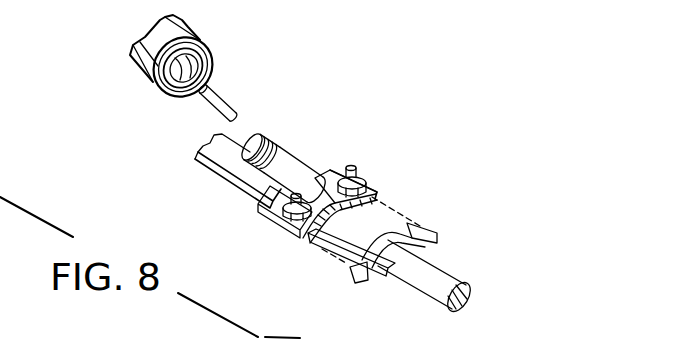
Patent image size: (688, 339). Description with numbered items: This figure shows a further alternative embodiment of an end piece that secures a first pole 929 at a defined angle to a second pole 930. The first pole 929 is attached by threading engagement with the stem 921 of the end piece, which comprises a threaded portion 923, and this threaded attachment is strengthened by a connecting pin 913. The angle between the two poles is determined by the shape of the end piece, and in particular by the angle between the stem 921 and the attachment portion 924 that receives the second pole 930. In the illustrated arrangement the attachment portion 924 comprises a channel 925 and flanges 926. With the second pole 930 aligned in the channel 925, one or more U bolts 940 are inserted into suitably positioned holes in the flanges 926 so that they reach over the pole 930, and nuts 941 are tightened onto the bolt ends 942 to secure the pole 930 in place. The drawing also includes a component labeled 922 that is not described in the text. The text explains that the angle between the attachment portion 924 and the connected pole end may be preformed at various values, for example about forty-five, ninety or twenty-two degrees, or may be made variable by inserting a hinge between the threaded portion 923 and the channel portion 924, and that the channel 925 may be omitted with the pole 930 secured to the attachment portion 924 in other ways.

The connecting pin 913 is at (223, 90).
The stem 921 is at (291, 166).
The mounting plate 922 is at (242, 189).
The threaded portion 923 is at (263, 133).
The attachment portion 924 is at (390, 235).
The channel 925 is at (427, 224).
The flanges 926 is at (255, 207).
The first pole 929 is at (203, 41).
The second pole 930 is at (452, 277).
The U bolt 940 is at (320, 250).
The nut 941 is at (362, 182).
The bolt end 942 is at (350, 166).